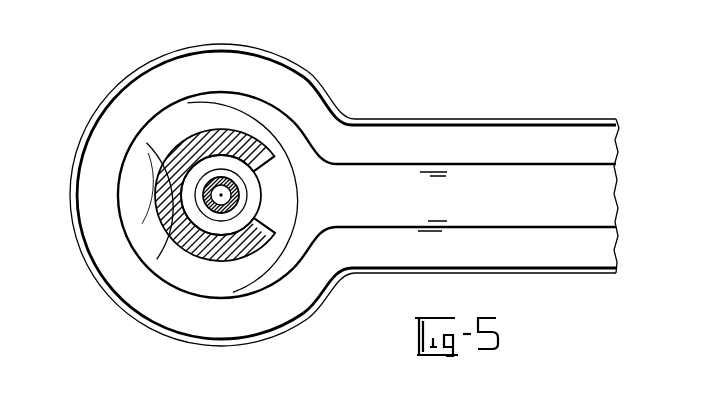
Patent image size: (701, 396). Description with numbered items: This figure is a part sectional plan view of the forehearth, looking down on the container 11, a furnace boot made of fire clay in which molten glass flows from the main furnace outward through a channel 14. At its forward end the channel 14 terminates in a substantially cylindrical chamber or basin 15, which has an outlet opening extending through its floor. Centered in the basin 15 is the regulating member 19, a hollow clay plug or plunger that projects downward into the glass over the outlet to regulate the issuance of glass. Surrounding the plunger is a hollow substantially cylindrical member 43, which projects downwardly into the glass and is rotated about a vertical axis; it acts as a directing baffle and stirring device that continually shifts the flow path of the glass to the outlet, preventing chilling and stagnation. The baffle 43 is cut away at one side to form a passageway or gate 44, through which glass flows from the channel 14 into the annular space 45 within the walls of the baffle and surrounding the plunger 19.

The container 11 is at (417, 135).
The channel 14 is at (583, 164).
The cylindrical chamber or basin 15 is at (281, 119).
The regulating member 19 is at (238, 203).
The hollow substantially cylindrical member 43 is at (224, 129).
The passageway or gate 44 is at (270, 182).
The annular space 45 is at (225, 229).